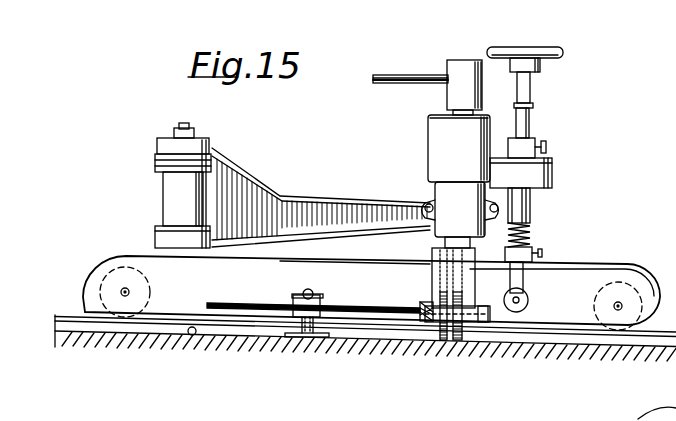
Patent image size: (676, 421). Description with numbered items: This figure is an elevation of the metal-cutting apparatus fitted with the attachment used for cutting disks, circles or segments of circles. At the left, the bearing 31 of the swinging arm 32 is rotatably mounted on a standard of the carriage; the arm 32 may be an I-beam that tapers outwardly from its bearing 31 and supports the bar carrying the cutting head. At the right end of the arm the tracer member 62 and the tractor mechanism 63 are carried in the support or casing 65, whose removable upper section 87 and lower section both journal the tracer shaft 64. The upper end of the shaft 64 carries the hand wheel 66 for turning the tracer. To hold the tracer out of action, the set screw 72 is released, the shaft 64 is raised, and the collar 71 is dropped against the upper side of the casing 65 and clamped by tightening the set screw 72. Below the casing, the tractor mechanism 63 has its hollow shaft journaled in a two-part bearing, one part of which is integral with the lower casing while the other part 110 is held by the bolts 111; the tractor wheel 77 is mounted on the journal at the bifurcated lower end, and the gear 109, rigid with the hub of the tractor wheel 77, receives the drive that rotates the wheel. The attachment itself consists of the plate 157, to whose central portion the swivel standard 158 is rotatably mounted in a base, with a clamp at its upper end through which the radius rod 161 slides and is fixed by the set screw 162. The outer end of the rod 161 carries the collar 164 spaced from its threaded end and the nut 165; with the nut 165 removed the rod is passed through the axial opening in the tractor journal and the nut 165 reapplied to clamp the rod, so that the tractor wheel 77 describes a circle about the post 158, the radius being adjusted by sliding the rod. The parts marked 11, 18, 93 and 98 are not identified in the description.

The carriage frame 11 is at (600, 263).
The carriage wheels 18 is at (123, 319).
The bearing 31 is at (162, 197).
The swinging arm 32 is at (281, 207).
The tracer member 62 is at (540, 217).
The tractor mechanism 63 is at (432, 254).
The shaft 64 is at (532, 113).
The support or casing 65 is at (553, 186).
The hand wheel 66 is at (554, 55).
The collar 71 is at (536, 140).
The set screw 72 is at (547, 147).
The tractor wheel 77 is at (463, 341).
The removable upper section 87 is at (440, 130).
The upper block 93 is at (461, 68).
The arm 98 is at (386, 75).
The gear 109 is at (443, 339).
The bearing part 110 is at (433, 188).
The bolts 111 is at (427, 206).
The plate 157 is at (190, 336).
The swivel standard 158 is at (298, 324).
The radius rod 161 is at (374, 307).
The set screw 162 is at (311, 291).
The collar 164 is at (418, 304).
The nut 165 is at (489, 319).